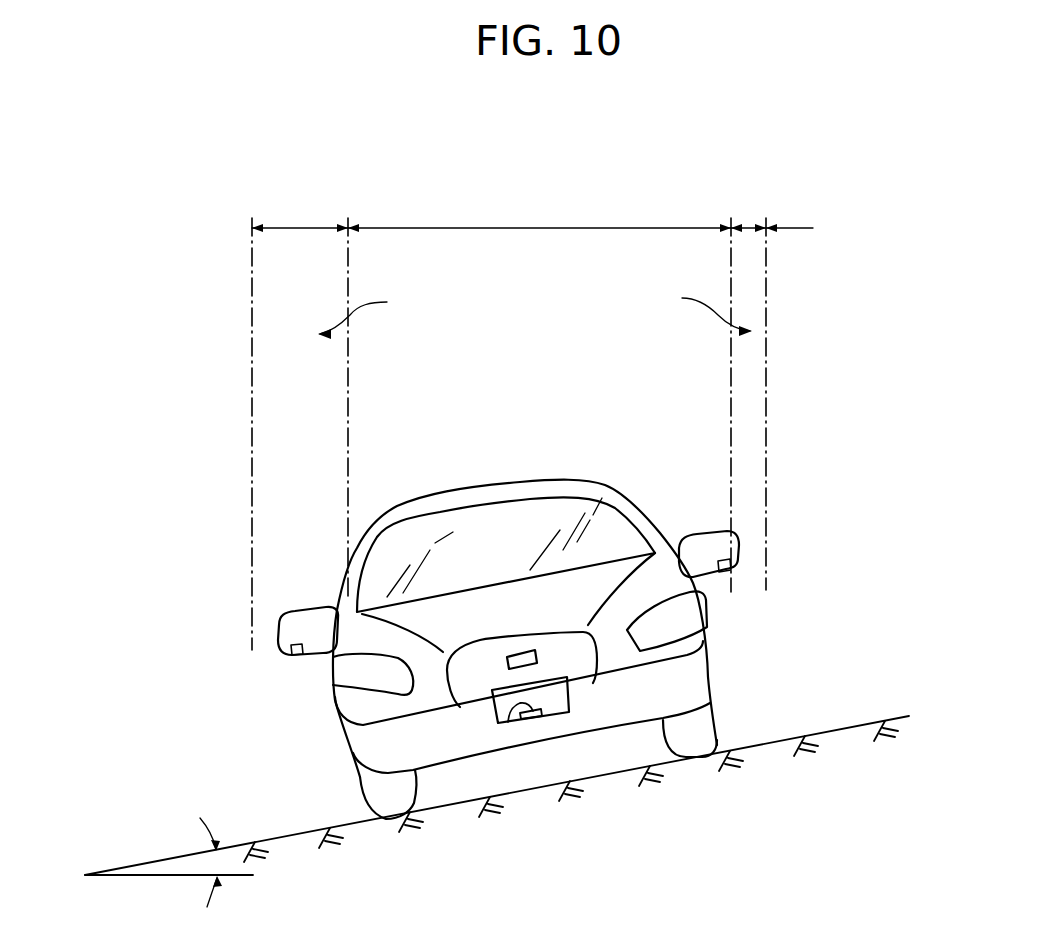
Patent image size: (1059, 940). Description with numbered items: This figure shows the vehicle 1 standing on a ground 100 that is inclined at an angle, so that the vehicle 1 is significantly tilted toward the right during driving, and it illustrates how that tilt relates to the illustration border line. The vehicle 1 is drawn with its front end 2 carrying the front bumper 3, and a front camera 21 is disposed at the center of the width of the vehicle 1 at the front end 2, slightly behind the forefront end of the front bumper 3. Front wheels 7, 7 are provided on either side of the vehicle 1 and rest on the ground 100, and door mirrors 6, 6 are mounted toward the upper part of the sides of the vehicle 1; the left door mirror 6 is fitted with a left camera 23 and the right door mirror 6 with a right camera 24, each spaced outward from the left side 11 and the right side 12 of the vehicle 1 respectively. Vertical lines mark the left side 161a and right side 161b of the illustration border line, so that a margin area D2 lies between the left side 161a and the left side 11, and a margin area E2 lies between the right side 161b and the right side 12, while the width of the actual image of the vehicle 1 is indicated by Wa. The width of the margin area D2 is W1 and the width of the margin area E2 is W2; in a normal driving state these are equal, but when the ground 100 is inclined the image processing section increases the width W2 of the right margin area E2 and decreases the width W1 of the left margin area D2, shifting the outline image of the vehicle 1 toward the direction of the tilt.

The vehicle 1 is at (580, 452).
The front end 2 is at (491, 669).
The front bumper 3 is at (607, 710).
The door mirror 6 is at (308, 623).
The front wheel 7 is at (362, 795).
The left side 11 is at (706, 603).
The right side 12 is at (335, 670).
The front camera 21 is at (507, 719).
The left camera 23 is at (737, 558).
The right camera 24 is at (291, 650).
The ground 100 is at (863, 720).
The left side of the illustration border line 161a is at (766, 358).
The right side of the illustration border line 161b is at (252, 353).
The width of the margin area D2 W1 is at (772, 213).
The width of the margin area E2 W2 is at (300, 395).
The width of the actual image of the vehicle Wa is at (539, 393).
The margin area E2 is at (369, 312).
The margin area D2 is at (700, 311).